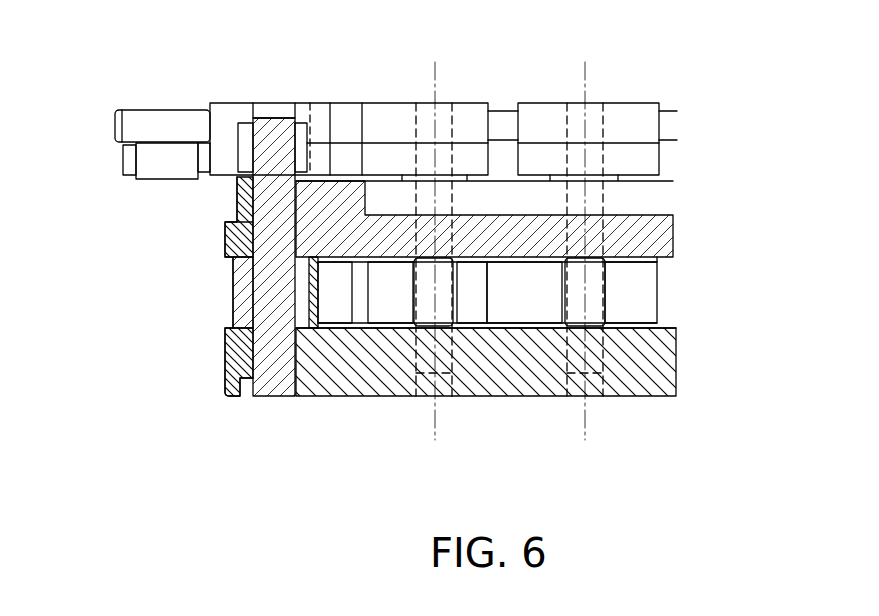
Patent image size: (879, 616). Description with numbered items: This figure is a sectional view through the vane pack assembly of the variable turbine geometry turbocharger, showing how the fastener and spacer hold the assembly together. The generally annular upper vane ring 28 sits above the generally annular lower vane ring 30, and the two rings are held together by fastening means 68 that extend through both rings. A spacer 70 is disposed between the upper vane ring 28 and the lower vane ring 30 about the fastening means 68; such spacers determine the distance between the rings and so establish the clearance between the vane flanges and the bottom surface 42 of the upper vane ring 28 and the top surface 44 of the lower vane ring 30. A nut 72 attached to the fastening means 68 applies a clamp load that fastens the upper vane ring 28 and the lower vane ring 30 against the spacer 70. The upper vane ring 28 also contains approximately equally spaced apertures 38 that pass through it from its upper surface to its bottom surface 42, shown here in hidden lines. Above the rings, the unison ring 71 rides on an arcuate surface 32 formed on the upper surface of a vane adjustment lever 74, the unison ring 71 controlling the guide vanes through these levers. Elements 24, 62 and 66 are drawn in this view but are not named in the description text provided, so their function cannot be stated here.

The lower plate assembly 24 is at (645, 304).
The upper vane ring 28 is at (643, 236).
The lower vane ring 30 is at (638, 375).
The arcuate surface 32 is at (230, 113).
The apertures 38 is at (452, 128).
The bottom surface 42 is at (665, 262).
The top surface 44 is at (675, 330).
The spacer blocks 62 is at (640, 305).
The center block 66 is at (540, 323).
The fastening means 68 is at (273, 380).
The spacers 70 is at (237, 295).
The unison ring 71 is at (143, 116).
The nuts 72 is at (243, 137).
The vane adjustment levers 74 is at (167, 160).